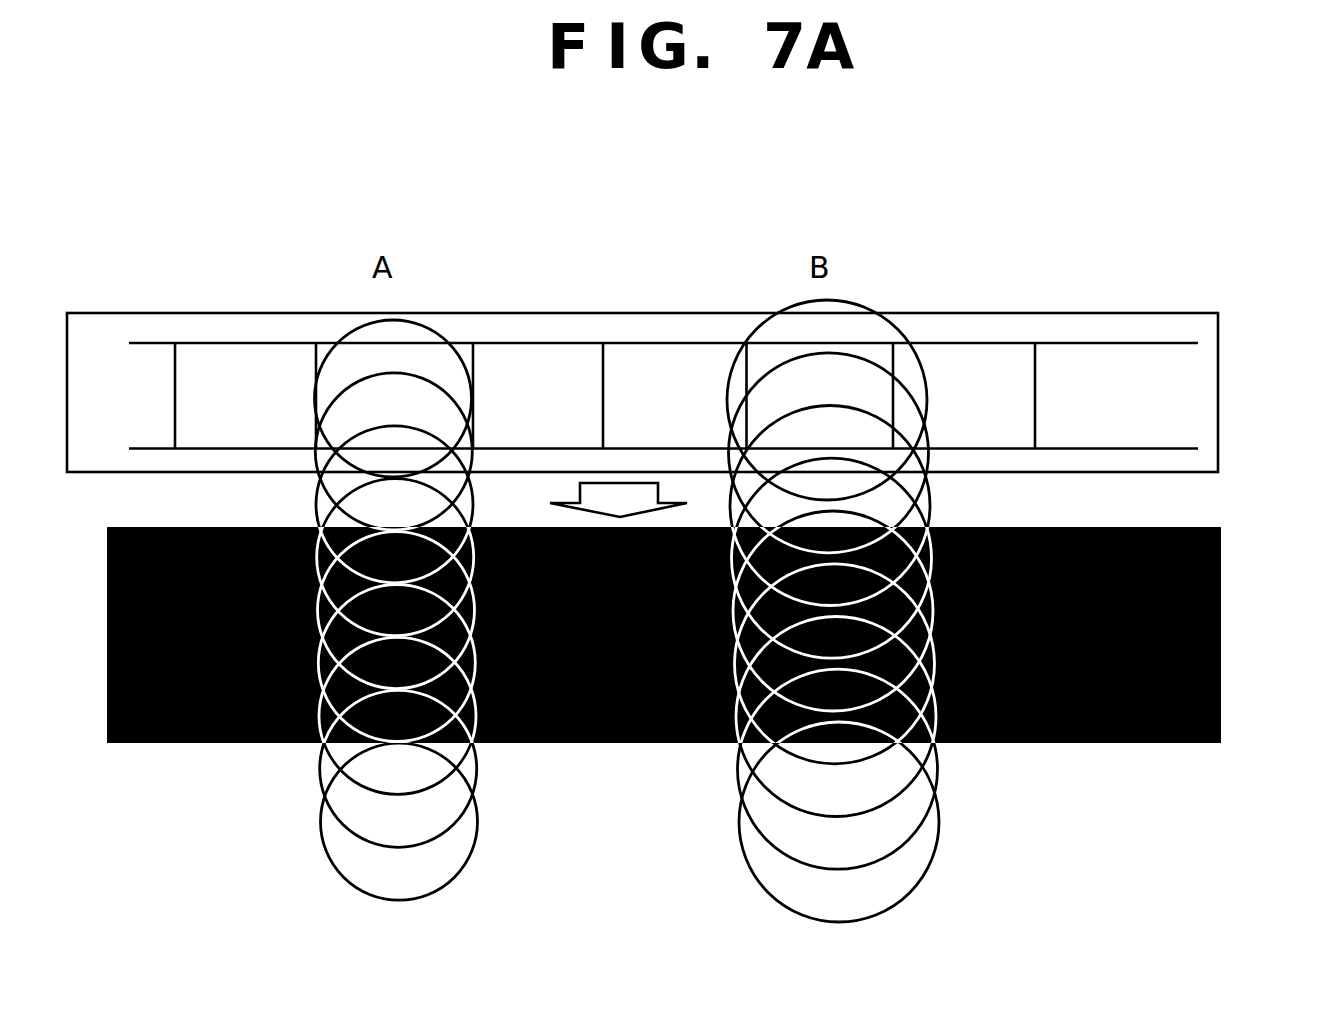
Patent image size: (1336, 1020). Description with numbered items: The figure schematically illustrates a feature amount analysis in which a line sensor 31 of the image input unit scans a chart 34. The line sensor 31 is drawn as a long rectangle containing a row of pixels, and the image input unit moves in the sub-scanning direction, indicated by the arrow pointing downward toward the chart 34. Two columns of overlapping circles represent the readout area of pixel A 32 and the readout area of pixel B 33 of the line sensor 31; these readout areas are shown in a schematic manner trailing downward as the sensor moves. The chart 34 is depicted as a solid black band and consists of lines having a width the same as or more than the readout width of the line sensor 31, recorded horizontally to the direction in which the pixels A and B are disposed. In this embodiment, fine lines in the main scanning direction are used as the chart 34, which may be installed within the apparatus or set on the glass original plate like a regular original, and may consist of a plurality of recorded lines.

The line sensor 31 is at (1218, 372).
The readout area of pixel A 32 is at (440, 337).
The readout area of pixel B 33 is at (897, 330).
The chart 34 is at (1221, 635).